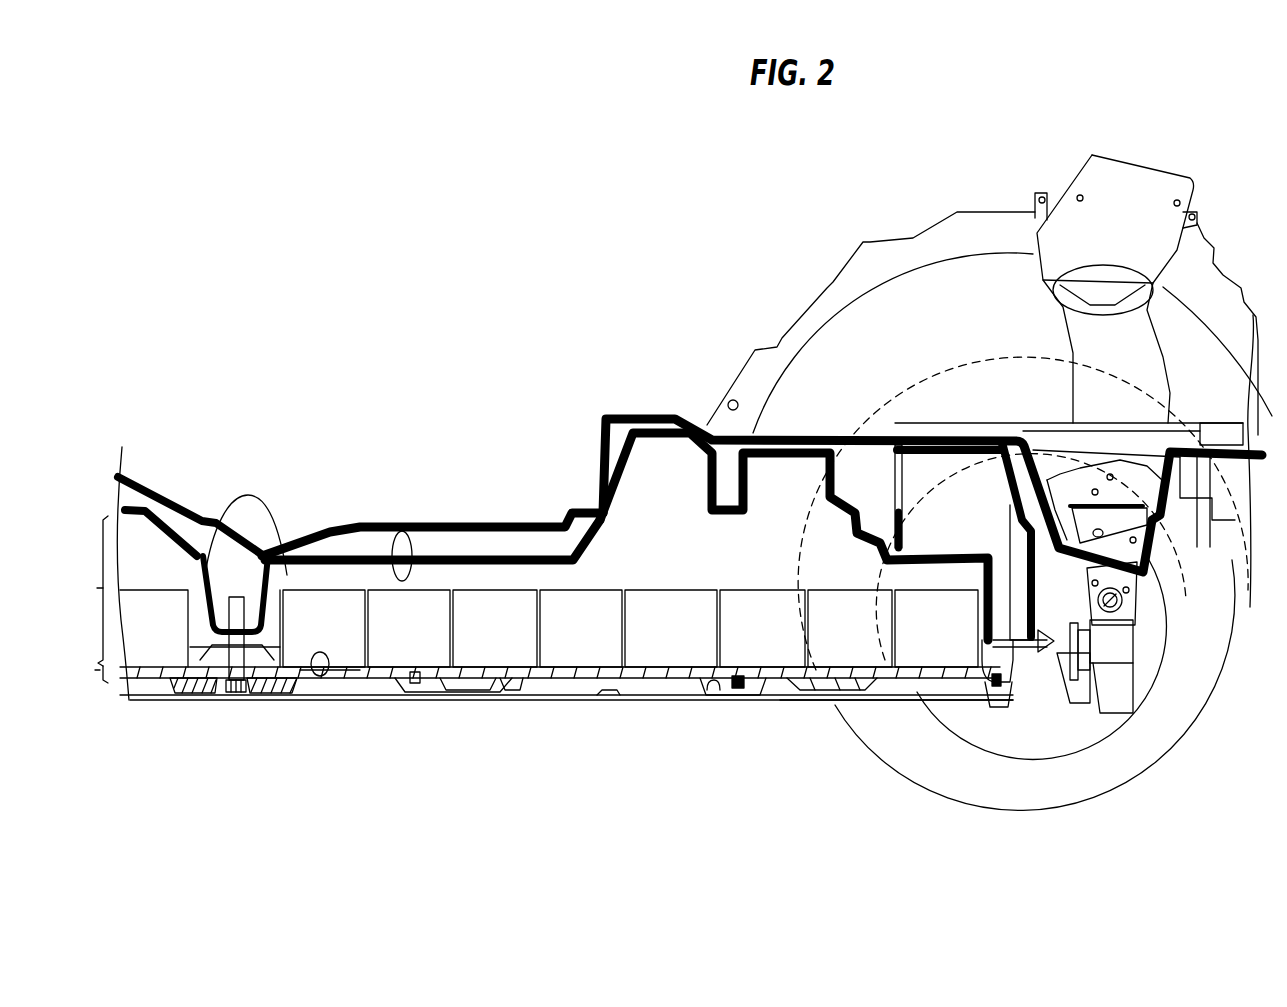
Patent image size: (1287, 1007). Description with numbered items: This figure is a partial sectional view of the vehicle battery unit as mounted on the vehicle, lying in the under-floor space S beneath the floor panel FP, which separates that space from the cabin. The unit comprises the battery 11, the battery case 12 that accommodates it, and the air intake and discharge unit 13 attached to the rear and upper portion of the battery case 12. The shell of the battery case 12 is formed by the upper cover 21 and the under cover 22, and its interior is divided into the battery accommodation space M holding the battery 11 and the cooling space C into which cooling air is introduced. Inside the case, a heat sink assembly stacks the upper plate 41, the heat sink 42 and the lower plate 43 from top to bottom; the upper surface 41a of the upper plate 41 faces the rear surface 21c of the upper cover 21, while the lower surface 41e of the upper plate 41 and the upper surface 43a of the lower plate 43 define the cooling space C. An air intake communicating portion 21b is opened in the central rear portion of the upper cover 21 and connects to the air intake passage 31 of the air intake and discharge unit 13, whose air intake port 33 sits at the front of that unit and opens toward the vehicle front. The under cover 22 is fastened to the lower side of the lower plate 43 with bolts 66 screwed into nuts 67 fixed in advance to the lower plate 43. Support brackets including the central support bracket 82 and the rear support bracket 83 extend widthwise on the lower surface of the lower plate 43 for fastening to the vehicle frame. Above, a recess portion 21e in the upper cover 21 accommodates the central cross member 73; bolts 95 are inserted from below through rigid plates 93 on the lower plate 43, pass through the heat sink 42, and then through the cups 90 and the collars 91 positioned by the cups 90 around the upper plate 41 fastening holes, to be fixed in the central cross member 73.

The upper plate 41 is at (145, 662).
The recess portion 21e is at (230, 568).
The central cross member 73 is at (258, 566).
The lower surface of the upper plate 41e is at (352, 665).
The under-floor space S is at (377, 536).
The rear surface of the upper cover 21c is at (405, 545).
The upper cover 21 is at (438, 545).
The battery 11 is at (672, 582).
The floor panel FP is at (649, 415).
The air intake port 33 is at (850, 433).
The air intake passage 31 is at (978, 525).
The battery accommodation space M is at (96, 600).
The cooling space C is at (94, 679).
The air intake and discharge unit 13 is at (1046, 573).
The lower plate 43 is at (137, 682).
The rigid plate 93 is at (181, 684).
The bolt 95 is at (237, 692).
The cup 90 is at (255, 690).
The collar 91 is at (225, 648).
The upper surface of the lower plate 43a is at (322, 678).
The upper surface of the upper plate 41a is at (470, 684).
The central support bracket 82 is at (515, 694).
The heat sink 42 is at (583, 672).
The nut 67 is at (713, 686).
The bolt 66 is at (739, 690).
The under cover 22 is at (783, 698).
The rear support bracket 83 is at (845, 690).
The battery case 12 is at (880, 716).
The air intake communicating portion 21b is at (1033, 655).